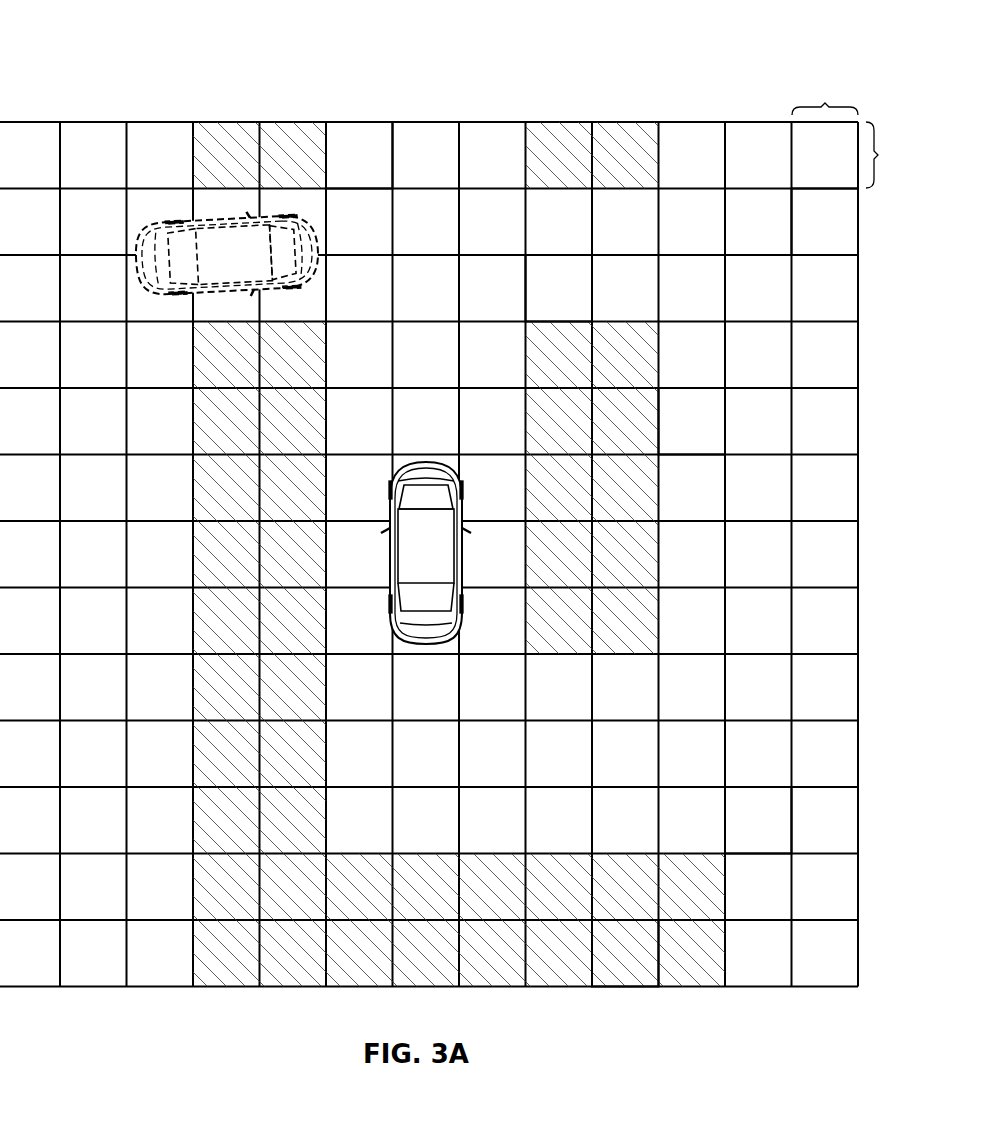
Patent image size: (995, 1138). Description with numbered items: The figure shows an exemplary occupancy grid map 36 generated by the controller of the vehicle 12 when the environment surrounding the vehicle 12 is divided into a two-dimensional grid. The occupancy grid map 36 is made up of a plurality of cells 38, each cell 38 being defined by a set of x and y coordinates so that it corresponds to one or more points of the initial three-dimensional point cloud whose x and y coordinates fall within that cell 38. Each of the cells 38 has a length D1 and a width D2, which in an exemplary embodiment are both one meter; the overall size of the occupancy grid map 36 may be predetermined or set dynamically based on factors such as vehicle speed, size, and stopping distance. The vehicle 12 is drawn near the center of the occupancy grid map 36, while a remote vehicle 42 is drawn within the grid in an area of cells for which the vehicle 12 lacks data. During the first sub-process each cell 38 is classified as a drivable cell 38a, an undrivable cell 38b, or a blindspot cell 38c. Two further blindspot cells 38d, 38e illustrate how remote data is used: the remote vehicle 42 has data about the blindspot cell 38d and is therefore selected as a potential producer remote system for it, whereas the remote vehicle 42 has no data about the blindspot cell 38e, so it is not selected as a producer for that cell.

The occupancy grid map 36 is at (83, 80).
The cell 38 is at (760, 828).
The drivable cell 38a is at (356, 155).
The undrivable cell 38b is at (622, 957).
The blindspot cell 38c is at (820, 216).
The blindspot cell 38d is at (555, 281).
The blindspot cell 38e is at (688, 413).
The remote vehicle 42 is at (202, 268).
The vehicle 12 is at (413, 575).
The length D1 is at (825, 98).
The width D2 is at (888, 155).